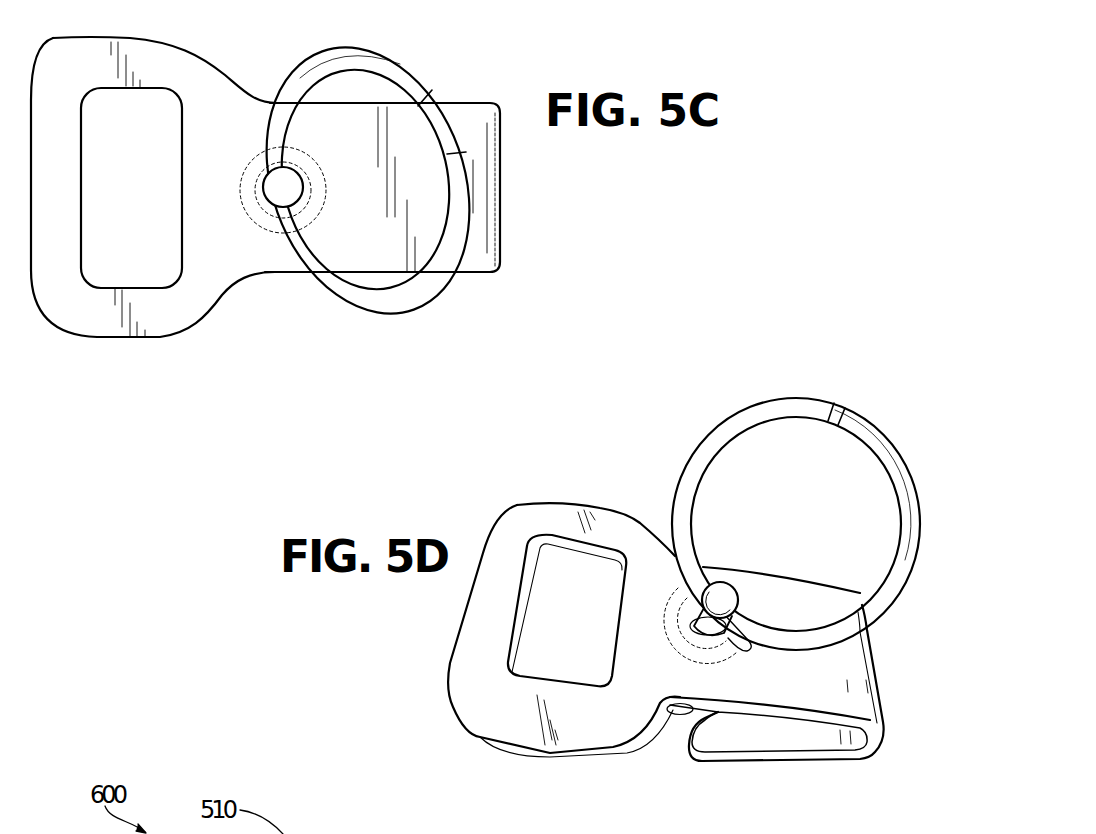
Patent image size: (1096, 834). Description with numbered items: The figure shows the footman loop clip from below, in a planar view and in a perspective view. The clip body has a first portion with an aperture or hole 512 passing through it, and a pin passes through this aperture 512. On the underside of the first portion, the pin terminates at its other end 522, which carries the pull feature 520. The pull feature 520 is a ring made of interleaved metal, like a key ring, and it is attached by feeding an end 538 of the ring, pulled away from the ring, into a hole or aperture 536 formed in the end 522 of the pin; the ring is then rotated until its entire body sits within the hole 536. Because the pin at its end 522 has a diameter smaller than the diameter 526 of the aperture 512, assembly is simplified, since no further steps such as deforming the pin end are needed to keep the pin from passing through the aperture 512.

In FIG. 5C, the pull feature 520 is at (385, 72).
In FIG. 5D, the pull feature 520 is at (805, 403).
In FIG. 5C, the other end of pin 522 is at (263, 206).
In FIG. 5D, the other end of pin 522 is at (726, 593).
In FIG. 5D, the end of ring 538 is at (860, 420).
In FIG. 5D, the diameter of aperture 526 is at (683, 637).
In FIG. 5D, the hole or aperture 536 is at (742, 627).
In FIG. 5C, the aperture or hole 512 is at (265, 187).
In FIG. 5D, the aperture or hole 512 is at (700, 633).